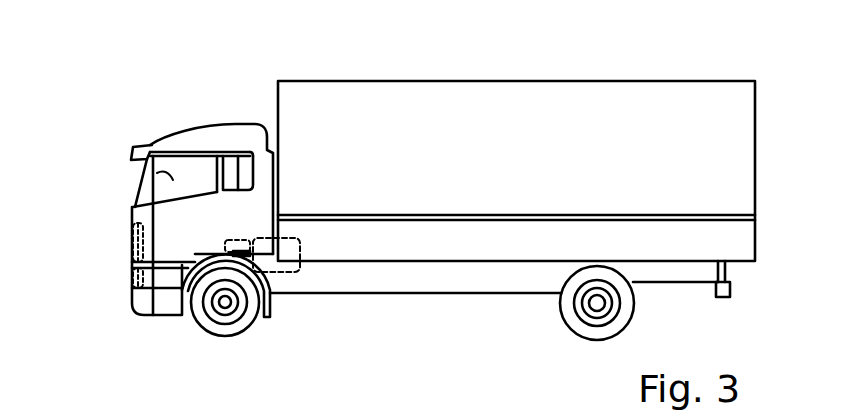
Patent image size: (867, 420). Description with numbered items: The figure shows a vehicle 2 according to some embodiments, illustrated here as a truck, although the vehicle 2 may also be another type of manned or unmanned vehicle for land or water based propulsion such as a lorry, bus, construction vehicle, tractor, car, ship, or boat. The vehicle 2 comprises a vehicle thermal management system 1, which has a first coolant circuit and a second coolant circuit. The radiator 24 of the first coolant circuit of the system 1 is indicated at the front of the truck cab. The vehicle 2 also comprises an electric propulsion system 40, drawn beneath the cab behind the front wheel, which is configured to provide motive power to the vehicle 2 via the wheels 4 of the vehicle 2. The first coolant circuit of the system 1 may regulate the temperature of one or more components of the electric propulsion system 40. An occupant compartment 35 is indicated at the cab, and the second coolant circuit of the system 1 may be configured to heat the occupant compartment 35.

The vehicle thermal management system 1 is at (236, 226).
The vehicle 2 is at (412, 187).
The wheels 4 is at (629, 325).
The radiator 24 is at (133, 239).
The occupant compartment 35 is at (157, 173).
The electric propulsion system 40 is at (287, 272).